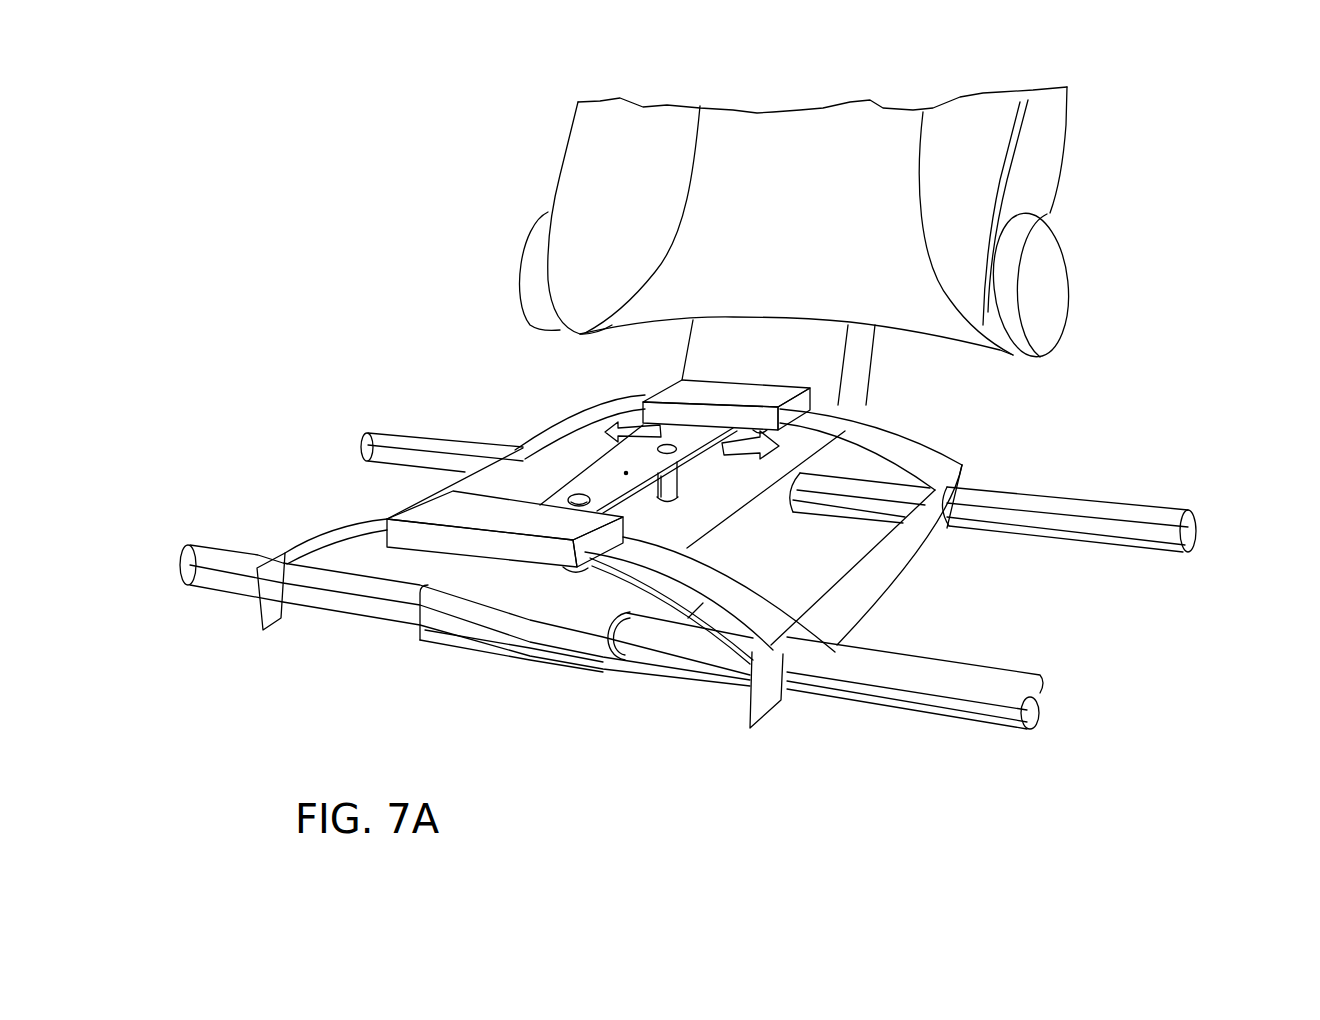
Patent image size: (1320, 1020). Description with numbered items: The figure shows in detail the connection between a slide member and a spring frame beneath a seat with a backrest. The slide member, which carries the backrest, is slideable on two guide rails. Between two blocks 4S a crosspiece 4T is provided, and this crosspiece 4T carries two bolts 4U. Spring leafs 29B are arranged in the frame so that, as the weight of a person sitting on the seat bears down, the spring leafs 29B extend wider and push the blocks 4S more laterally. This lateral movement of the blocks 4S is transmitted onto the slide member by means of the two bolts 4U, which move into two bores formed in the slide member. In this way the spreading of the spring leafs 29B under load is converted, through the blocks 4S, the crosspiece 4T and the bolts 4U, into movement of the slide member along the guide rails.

The blocks 4S is at (662, 383).
The crosspiece 4T is at (520, 445).
The bolts 4U is at (605, 508).
The spring leafs 29B is at (890, 440).